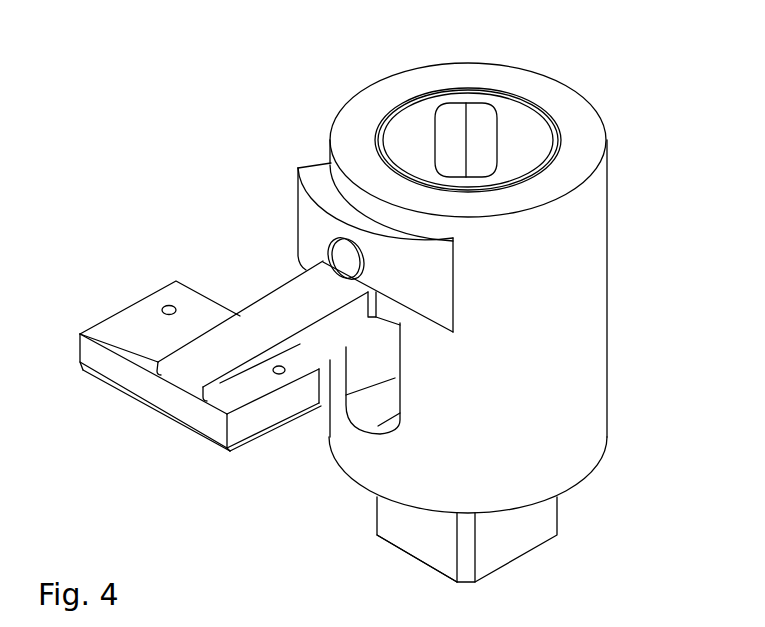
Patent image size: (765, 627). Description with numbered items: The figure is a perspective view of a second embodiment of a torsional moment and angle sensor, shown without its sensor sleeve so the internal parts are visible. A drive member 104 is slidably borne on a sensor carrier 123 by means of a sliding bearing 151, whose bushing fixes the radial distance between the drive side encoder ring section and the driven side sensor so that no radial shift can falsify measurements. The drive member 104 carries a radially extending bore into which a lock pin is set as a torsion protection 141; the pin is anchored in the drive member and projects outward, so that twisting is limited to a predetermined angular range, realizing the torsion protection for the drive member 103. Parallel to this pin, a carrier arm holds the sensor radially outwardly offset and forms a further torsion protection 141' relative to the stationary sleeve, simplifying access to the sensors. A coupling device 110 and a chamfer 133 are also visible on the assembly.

The coupling device 110 is at (341, 109).
The sliding bearing 151 is at (380, 148).
The drive member 103 is at (503, 137).
The sensor carrier 123 is at (588, 251).
The torsion protection 141' is at (228, 339).
The torsion protection 141 is at (322, 414).
The drive member 104 is at (557, 518).
The chamfer 133 is at (410, 553).